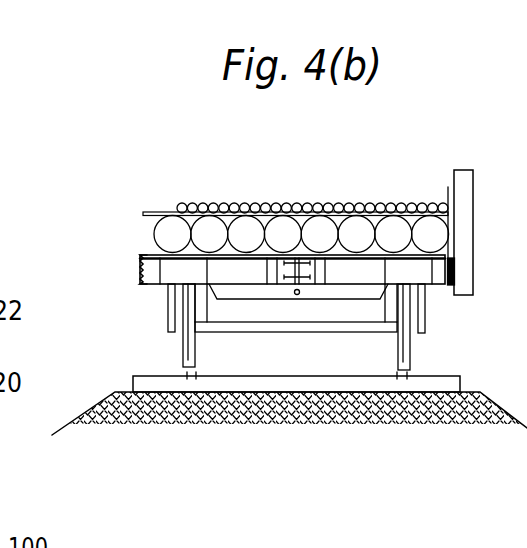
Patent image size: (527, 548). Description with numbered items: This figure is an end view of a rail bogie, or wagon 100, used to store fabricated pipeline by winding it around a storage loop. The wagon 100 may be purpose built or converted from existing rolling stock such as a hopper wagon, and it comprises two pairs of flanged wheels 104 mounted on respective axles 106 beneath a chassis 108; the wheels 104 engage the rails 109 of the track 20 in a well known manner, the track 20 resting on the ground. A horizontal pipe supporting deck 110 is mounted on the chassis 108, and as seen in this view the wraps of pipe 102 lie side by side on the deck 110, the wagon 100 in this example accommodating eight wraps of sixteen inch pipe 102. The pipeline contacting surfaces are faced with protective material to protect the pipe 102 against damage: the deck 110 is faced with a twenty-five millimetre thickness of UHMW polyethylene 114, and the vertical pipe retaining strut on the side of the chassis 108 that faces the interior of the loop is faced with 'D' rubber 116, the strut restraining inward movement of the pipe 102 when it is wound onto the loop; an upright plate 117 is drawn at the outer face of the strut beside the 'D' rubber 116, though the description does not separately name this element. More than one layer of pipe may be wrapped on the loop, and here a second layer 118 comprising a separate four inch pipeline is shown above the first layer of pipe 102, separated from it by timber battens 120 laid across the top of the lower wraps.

The track 20 is at (112, 376).
The wagon 100 is at (118, 259).
The pipe 102 is at (358, 231).
The flanged wheels 104 is at (183, 350).
The axles 106 is at (297, 333).
The chassis 108 is at (347, 284).
The rails 109 is at (187, 375).
The pipe supporting deck 110 is at (161, 251).
The UHMW polyethylene 114 is at (143, 280).
The 'D' rubber 116 is at (448, 187).
The end plate 117 is at (472, 170).
The second layer 118 is at (293, 211).
The timber battens 120 is at (165, 212).